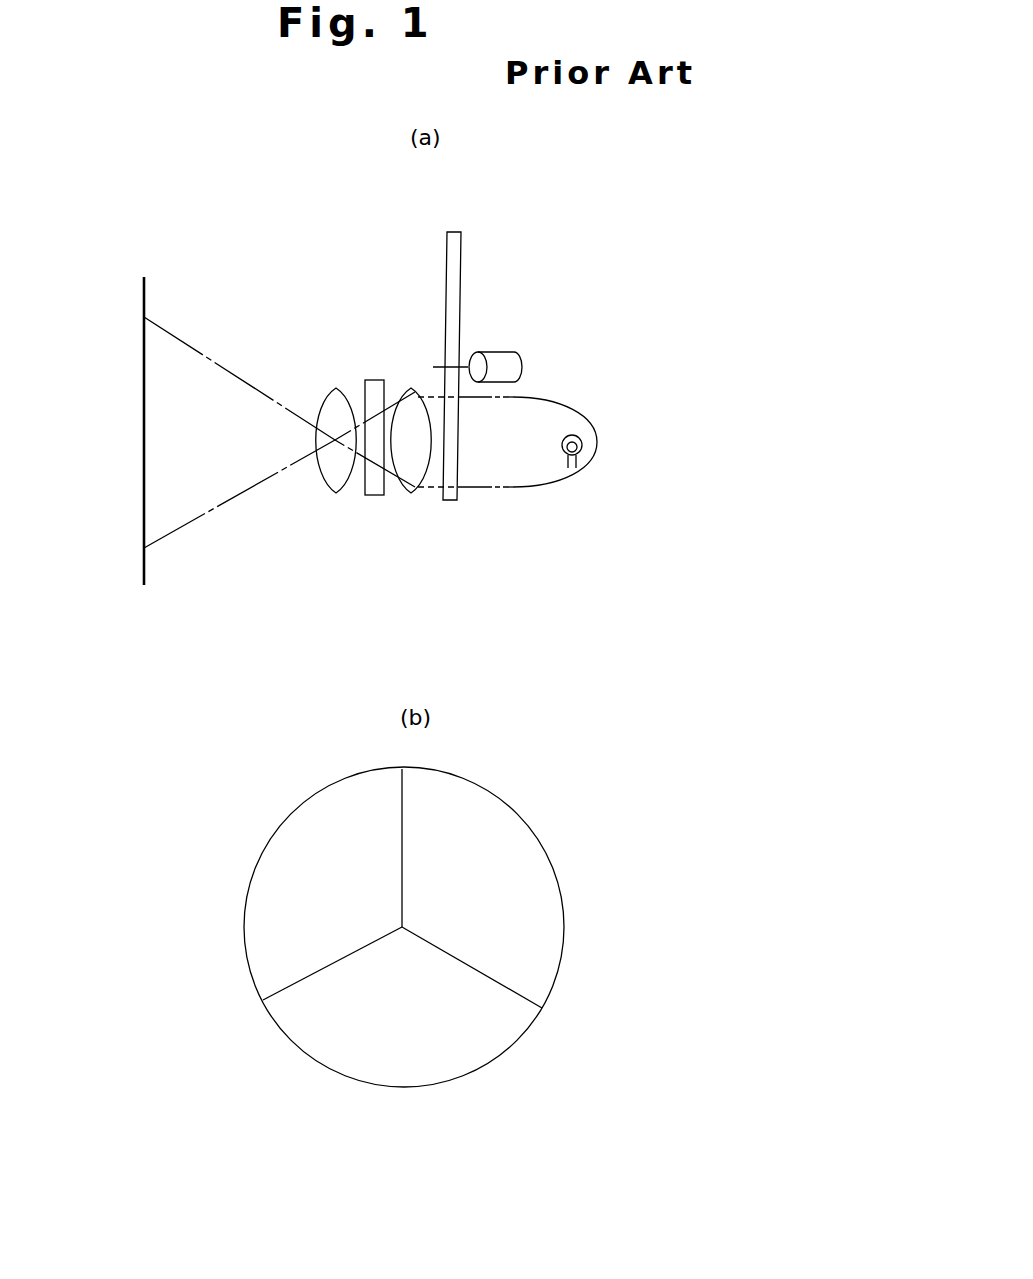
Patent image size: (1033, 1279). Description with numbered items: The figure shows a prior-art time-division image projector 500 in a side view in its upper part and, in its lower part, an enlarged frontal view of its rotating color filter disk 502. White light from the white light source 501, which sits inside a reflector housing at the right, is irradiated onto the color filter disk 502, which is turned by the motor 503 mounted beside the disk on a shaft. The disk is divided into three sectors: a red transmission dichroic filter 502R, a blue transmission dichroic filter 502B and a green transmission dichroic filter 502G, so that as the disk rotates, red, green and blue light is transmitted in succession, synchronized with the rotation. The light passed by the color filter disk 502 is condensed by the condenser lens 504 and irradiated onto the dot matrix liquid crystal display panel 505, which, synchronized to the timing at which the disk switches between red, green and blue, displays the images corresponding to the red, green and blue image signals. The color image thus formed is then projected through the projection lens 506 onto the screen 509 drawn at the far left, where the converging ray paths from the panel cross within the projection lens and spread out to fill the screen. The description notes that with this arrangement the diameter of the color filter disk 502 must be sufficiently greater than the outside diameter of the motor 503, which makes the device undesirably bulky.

The time-division image projector 500 is at (522, 263).
The white light source 501 is at (580, 436).
The color filter disk 502 is at (445, 500).
The red transmission dichroic filter 502R is at (297, 858).
The blue transmission dichroic filter 502B is at (500, 837).
The green transmission dichroic filter 502G is at (390, 1071).
The motor 503 is at (522, 367).
The condenser lens 504 is at (410, 493).
The dot matrix liquid crystal display panel 505 is at (372, 495).
The projection lens 506 is at (335, 493).
The screen 509 is at (150, 290).